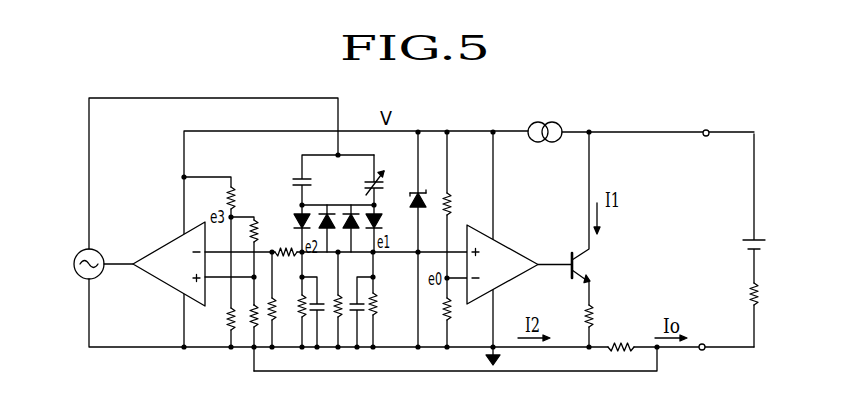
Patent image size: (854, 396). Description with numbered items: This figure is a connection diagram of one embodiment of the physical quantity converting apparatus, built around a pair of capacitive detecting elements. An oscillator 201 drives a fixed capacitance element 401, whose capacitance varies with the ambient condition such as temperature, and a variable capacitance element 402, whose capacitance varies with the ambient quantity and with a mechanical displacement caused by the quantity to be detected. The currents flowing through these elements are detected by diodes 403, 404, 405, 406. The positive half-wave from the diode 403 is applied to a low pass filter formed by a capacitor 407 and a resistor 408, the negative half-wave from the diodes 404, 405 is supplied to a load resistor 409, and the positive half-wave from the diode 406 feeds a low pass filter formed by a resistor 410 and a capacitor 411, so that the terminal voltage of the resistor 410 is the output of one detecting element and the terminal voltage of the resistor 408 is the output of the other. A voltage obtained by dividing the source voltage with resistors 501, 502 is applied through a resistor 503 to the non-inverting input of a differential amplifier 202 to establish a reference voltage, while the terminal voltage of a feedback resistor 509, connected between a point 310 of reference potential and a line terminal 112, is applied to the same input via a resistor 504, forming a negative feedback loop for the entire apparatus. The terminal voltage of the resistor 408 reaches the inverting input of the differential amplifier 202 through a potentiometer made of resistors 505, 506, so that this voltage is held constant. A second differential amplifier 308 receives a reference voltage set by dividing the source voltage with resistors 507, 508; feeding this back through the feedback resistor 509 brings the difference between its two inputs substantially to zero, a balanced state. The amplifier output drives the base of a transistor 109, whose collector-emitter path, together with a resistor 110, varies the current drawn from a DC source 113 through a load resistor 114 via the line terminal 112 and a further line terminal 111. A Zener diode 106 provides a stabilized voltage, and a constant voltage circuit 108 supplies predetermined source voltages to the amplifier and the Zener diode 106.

The Zener diode 106 is at (426, 197).
The constant voltage circuit 108 is at (545, 120).
The transistor 109 is at (581, 264).
The resistor 110 is at (603, 326).
The line terminal 111 is at (707, 122).
The line terminal 112 is at (708, 362).
The DC source 113 is at (767, 208).
The load resistor 114 is at (765, 315).
The oscillator 201 is at (103, 251).
The differential amplifier 202 is at (204, 264).
The differential amplifier 308 is at (519, 264).
The point of reference potential 310 is at (504, 360).
The fixed capacitance element 401 is at (321, 178).
The variable capacitance element 402 is at (371, 186).
The diode 403 is at (294, 217).
The diode 404 is at (330, 213).
The diode 405 is at (361, 204).
The diode 406 is at (385, 228).
The capacitor 407 is at (320, 298).
The resistor 408 is at (299, 318).
The load resistor 409 is at (336, 318).
The resistor 410 is at (386, 299).
The capacitor 411 is at (352, 288).
The resistor 501 is at (236, 204).
The resistor 502 is at (222, 283).
The resistor 503 is at (259, 230).
The resistor 504 is at (252, 330).
The resistor 505 is at (367, 252).
The resistor 506 is at (290, 296).
The resistor 507 is at (460, 213).
The resistor 508 is at (447, 308).
The feedback resistor 509 is at (623, 349).